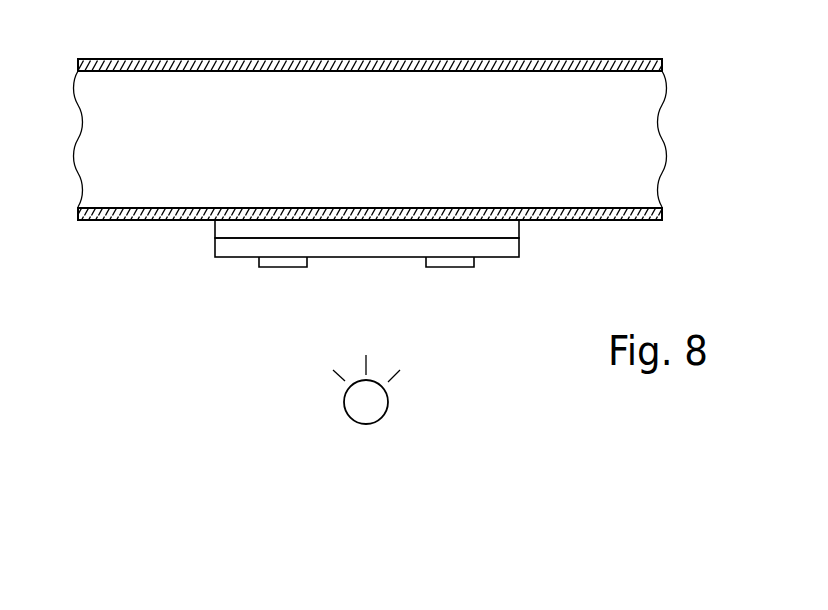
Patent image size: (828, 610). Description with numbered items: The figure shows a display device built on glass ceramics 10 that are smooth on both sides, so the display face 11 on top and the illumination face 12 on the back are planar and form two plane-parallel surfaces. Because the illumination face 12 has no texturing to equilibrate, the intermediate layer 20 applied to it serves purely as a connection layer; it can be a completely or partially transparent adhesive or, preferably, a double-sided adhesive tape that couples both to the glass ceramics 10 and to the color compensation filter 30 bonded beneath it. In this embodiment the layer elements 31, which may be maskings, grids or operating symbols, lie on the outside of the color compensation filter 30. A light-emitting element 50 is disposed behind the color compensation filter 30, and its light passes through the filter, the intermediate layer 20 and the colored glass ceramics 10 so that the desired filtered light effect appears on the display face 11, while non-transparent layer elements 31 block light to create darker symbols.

The glass ceramics 10 is at (370, 147).
The display face 11 is at (424, 57).
The illumination face 12 is at (149, 223).
The intermediate layer 20 is at (513, 228).
The color compensation filter 30 is at (505, 248).
The layer elements 31 is at (285, 267).
The light-emitting element 50 is at (360, 408).